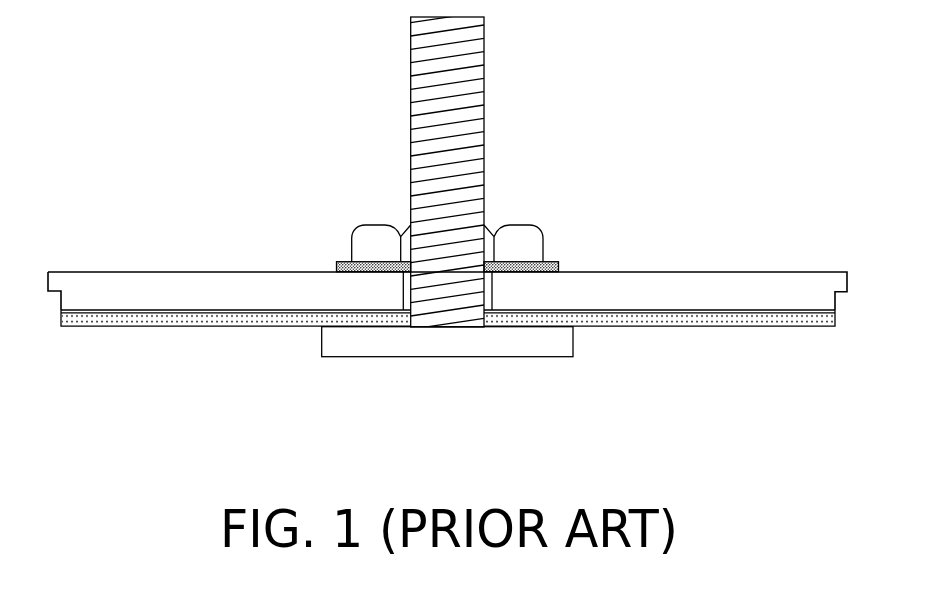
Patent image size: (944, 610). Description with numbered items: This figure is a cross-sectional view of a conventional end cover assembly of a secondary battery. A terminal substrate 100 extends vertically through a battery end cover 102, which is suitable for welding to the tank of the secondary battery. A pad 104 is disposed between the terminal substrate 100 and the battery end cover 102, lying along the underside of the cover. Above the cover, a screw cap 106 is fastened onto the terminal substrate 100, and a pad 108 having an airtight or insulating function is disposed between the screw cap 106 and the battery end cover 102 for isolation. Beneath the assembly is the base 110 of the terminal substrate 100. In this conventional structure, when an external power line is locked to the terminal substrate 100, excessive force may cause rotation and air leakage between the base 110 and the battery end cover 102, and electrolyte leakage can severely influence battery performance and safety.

The terminal substrate 100 is at (485, 120).
The battery end cover 102 is at (152, 282).
The pad 104 is at (157, 315).
The screw cap 106 is at (532, 243).
The pad 108 is at (336, 264).
The base 110 is at (573, 341).